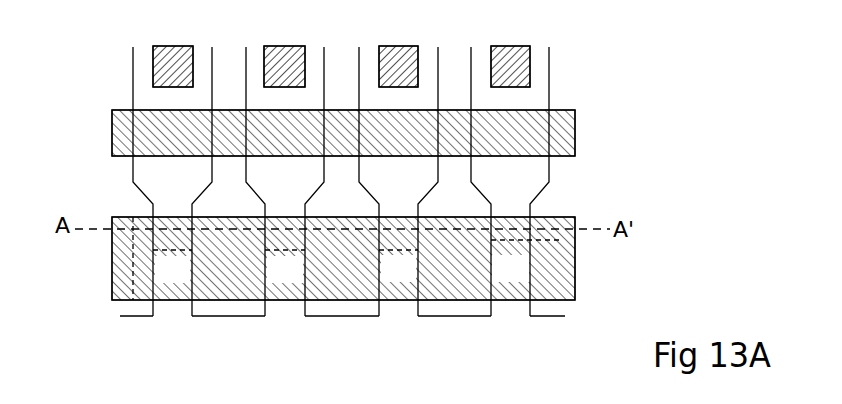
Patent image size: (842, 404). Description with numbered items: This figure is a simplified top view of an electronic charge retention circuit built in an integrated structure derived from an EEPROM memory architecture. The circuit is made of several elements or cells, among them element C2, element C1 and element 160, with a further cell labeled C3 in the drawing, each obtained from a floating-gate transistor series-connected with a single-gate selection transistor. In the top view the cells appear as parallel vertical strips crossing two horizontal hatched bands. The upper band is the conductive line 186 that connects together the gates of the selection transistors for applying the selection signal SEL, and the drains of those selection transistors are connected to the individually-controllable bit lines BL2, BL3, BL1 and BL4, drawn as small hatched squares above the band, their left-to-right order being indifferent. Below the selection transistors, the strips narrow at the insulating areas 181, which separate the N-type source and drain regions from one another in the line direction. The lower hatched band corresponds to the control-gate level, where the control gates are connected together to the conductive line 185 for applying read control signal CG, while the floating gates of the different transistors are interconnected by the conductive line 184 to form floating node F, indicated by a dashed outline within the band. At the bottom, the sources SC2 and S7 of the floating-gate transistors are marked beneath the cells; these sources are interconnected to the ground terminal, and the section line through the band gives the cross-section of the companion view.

The bit line BL1 is at (420, 32).
The bit line BL2 is at (157, 58).
The bit line BL3 is at (284, 47).
The bit line BL4 is at (530, 60).
The conductive line 186 is at (120, 135).
The insulating areas 181 is at (246, 197).
The conductive line 185 is at (118, 250).
The conductive line 184 is at (538, 240).
The element 160 is at (510, 269).
The element C1 is at (398, 266).
The element C2 is at (172, 267).
The contact C3 is at (285, 267).
The source SC2 is at (171, 334).
The source S7 is at (283, 334).